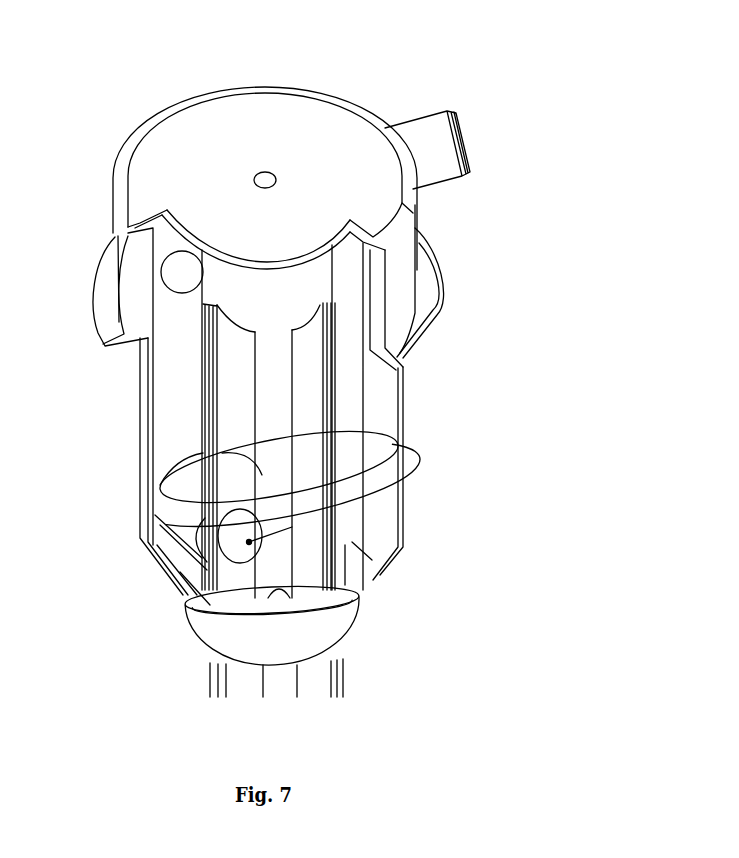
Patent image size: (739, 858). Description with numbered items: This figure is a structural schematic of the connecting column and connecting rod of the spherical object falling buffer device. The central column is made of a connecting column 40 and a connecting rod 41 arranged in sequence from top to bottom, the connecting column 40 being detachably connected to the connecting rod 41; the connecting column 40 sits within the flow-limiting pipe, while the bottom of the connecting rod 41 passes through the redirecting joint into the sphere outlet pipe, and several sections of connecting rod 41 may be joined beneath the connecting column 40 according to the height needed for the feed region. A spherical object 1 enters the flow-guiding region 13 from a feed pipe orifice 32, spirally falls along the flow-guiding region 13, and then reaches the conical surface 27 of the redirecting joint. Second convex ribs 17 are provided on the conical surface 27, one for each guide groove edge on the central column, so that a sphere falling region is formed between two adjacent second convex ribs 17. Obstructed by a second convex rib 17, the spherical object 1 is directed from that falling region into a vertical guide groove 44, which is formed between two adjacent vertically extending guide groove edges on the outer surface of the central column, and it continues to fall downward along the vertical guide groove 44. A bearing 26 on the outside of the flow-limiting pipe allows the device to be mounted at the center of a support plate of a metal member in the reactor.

The spherical object 1 is at (190, 600).
The flow-guiding region 13 is at (176, 354).
The second convex rib 17 is at (183, 541).
The bearing 26 is at (413, 320).
The conical surface 27 is at (176, 481).
The feed pipe orifice 32 is at (406, 137).
The connecting column 40 is at (275, 468).
The connecting rod 41 is at (292, 527).
The vertical guide groove 44 is at (322, 560).